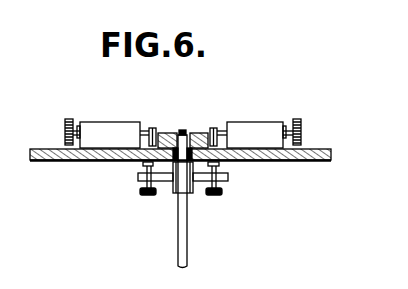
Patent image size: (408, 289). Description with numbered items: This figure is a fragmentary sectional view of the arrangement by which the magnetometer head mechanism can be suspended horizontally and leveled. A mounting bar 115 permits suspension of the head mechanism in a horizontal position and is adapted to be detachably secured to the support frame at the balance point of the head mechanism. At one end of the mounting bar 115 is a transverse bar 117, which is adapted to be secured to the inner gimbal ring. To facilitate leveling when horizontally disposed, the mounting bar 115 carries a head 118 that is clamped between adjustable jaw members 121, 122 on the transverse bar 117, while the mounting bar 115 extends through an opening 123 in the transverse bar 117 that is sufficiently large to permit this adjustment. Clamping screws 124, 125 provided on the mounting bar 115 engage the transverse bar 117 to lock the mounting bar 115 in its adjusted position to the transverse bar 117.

The mounting bar 115 is at (188, 238).
The transverse bar 117 is at (312, 160).
The head 118 is at (165, 146).
The adjustable jaw member 121 is at (155, 128).
The adjustable jaw member 122 is at (216, 128).
The opening 123 is at (194, 147).
The clamping screw 124 is at (146, 163).
The clamping screw 125 is at (218, 163).